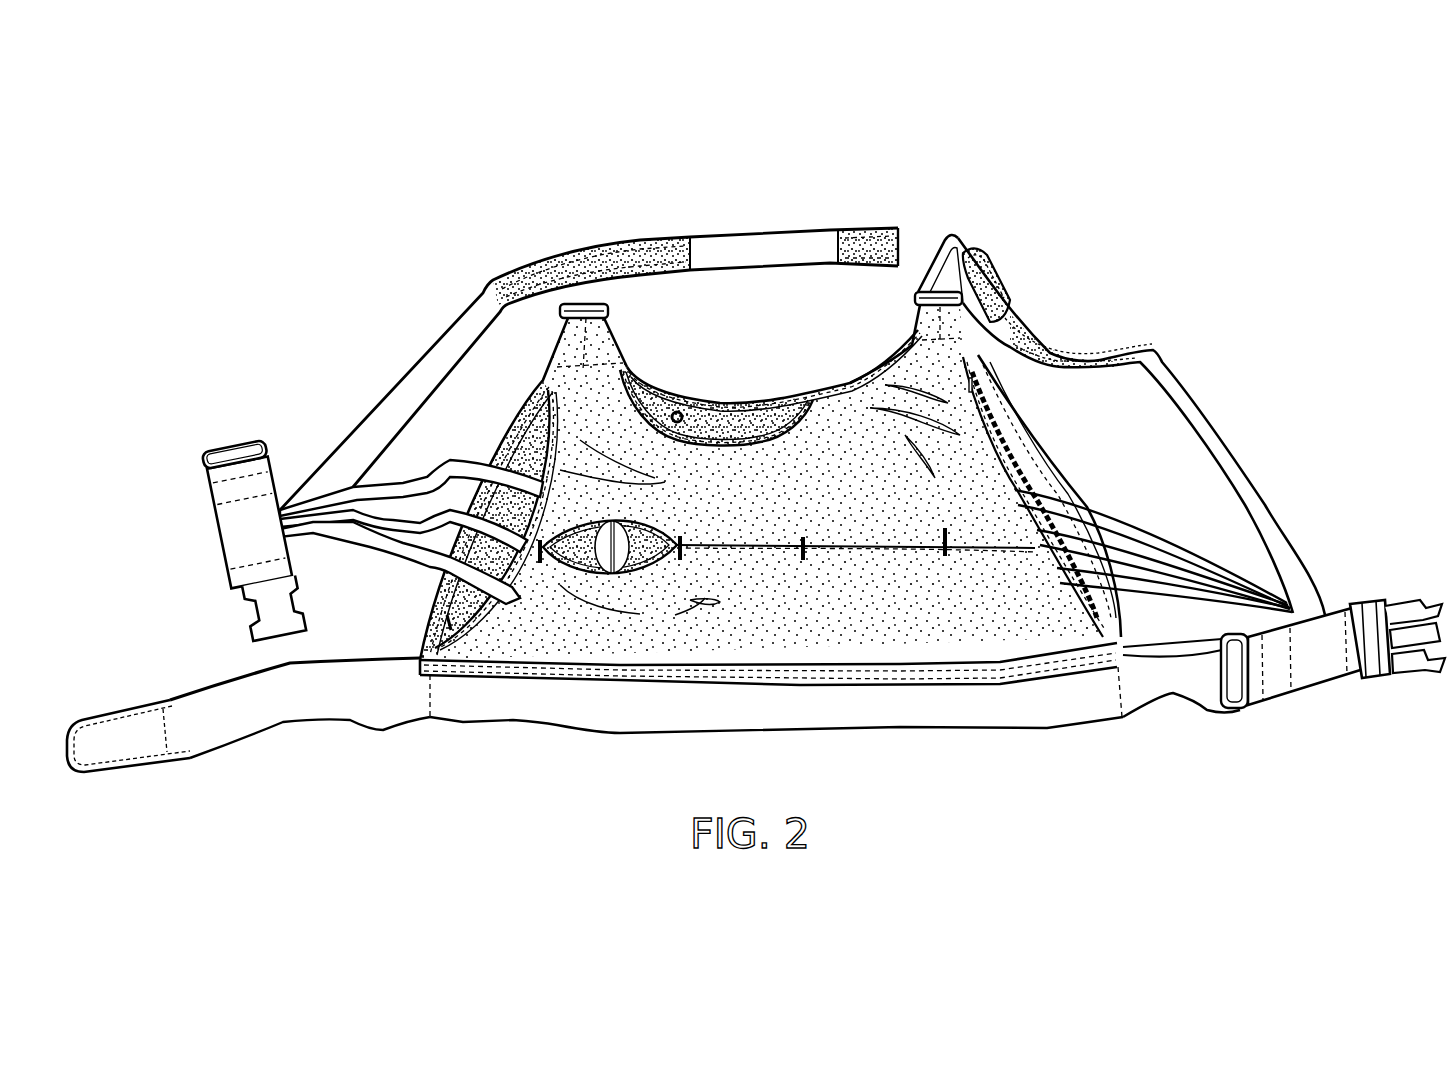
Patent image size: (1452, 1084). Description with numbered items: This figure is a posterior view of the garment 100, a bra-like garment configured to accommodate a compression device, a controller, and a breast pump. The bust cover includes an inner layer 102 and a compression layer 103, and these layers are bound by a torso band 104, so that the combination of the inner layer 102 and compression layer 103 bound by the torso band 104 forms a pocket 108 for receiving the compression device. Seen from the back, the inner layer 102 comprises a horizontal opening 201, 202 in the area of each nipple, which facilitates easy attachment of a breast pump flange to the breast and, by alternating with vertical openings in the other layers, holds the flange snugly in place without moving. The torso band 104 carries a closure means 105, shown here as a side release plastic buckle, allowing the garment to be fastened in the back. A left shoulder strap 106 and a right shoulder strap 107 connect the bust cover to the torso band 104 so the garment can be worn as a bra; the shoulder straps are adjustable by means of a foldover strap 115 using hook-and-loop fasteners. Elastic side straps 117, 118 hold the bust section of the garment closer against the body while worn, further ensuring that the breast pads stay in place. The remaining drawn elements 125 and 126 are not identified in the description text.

The garment 100 is at (1194, 210).
The inner layer 102 is at (827, 432).
The compression layer 103 is at (510, 420).
The torso band 104 is at (1050, 717).
The closure means 105 is at (1313, 677).
The left shoulder strap 106 is at (452, 318).
The right shoulder strap 107 is at (1160, 367).
The pocket 108 is at (712, 410).
The foldover strap 115 is at (987, 253).
The elastic side strap 117 is at (374, 556).
The elastic side strap 118 is at (1153, 506).
The buckle receptacle 125 is at (230, 544).
The waist strap end 126 is at (123, 730).
The horizontal opening 201 is at (600, 585).
The horizontal opening 202 is at (883, 555).